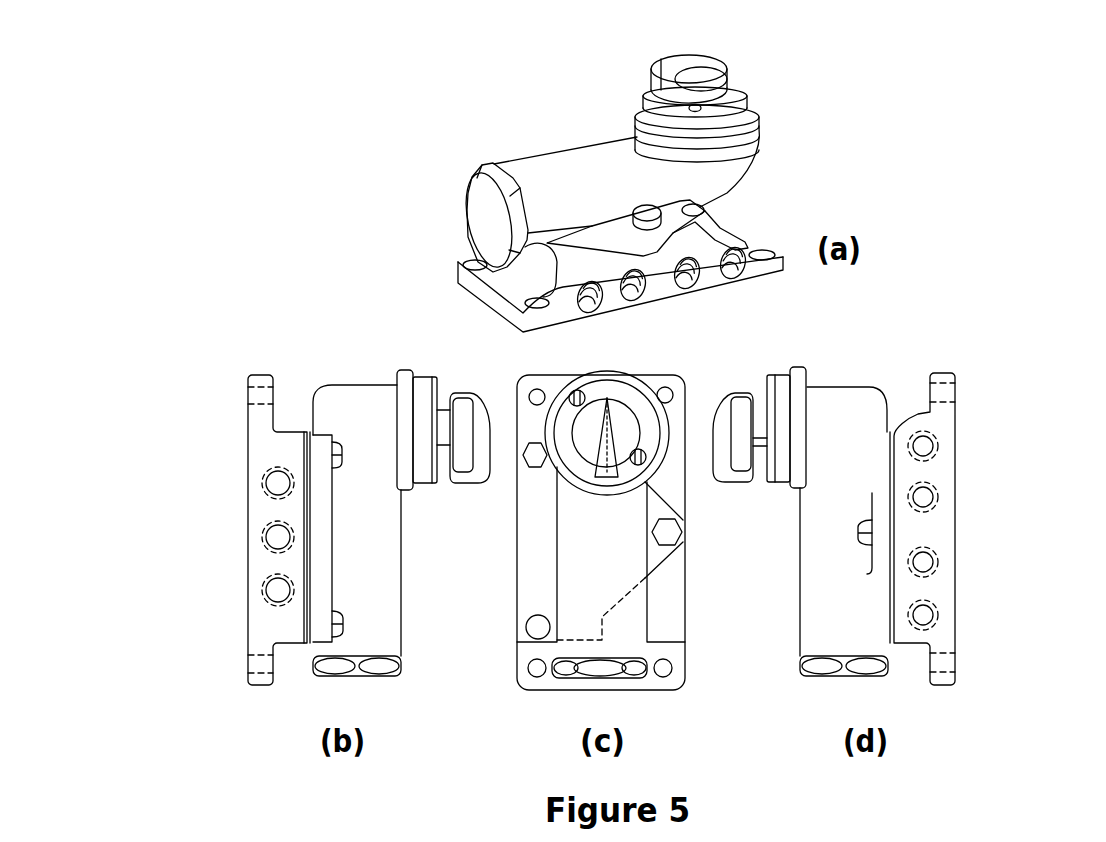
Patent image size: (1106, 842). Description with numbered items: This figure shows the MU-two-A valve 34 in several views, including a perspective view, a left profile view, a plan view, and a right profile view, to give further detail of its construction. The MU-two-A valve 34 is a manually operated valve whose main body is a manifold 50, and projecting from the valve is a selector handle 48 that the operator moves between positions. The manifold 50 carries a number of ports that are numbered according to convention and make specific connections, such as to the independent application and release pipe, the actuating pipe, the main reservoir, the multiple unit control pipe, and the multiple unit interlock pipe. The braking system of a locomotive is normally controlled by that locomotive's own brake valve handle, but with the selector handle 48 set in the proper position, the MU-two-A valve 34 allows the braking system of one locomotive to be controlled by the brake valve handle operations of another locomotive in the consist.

The MU-2-A valve 34 is at (820, 132).
The selector handle 48 is at (717, 73).
The manifold 50 is at (741, 246).